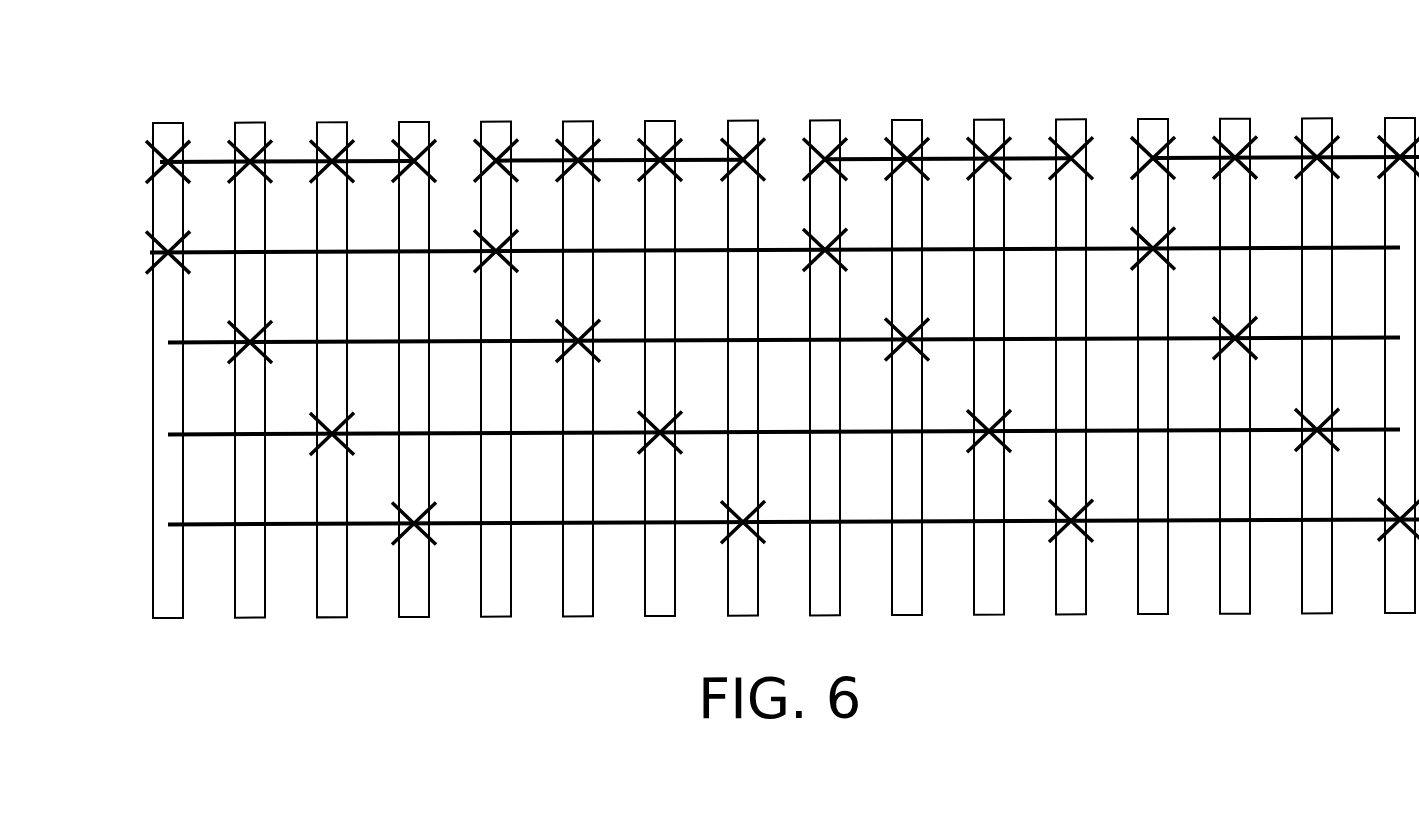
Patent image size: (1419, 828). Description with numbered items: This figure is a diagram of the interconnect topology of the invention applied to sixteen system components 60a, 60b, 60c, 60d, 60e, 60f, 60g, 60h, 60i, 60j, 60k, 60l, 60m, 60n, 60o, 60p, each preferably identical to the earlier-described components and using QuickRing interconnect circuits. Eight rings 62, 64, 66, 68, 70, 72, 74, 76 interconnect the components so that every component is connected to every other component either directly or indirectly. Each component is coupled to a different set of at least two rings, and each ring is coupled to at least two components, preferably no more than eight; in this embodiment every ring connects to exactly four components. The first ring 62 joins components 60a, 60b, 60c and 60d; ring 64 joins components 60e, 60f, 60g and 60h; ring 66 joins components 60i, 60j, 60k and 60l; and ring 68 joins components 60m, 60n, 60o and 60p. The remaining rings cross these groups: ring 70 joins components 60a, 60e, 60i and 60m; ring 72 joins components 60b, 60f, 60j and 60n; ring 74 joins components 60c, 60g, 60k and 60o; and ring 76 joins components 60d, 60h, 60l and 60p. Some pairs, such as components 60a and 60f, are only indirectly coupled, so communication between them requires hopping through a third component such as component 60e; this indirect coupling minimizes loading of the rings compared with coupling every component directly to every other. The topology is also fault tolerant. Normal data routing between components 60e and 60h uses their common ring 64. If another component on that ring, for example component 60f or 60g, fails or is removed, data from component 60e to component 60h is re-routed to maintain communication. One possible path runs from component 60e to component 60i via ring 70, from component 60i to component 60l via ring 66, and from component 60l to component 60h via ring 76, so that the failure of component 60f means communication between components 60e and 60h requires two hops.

The system component 60a is at (178, 120).
The system component 60b is at (260, 120).
The system component 60c is at (342, 120).
The system component 60d is at (424, 120).
The system component 60e is at (506, 120).
The system component 60f is at (588, 120).
The system component 60g is at (670, 120).
The system component 60h is at (753, 120).
The system component 60i is at (835, 120).
The system component 60j is at (917, 120).
The system component 60k is at (999, 120).
The system component 60l is at (1081, 120).
The system component 60m is at (1163, 120).
The system component 60n is at (1245, 120).
The system component 60o is at (1327, 120).
The system component 60p is at (1410, 120).
The ring 62 is at (295, 152).
The ring 64 is at (622, 152).
The ring 66 is at (950, 152).
The ring 68 is at (1355, 150).
The ring 70 is at (212, 256).
The ring 72 is at (203, 344).
The ring 74 is at (205, 434).
The ring 76 is at (205, 524).